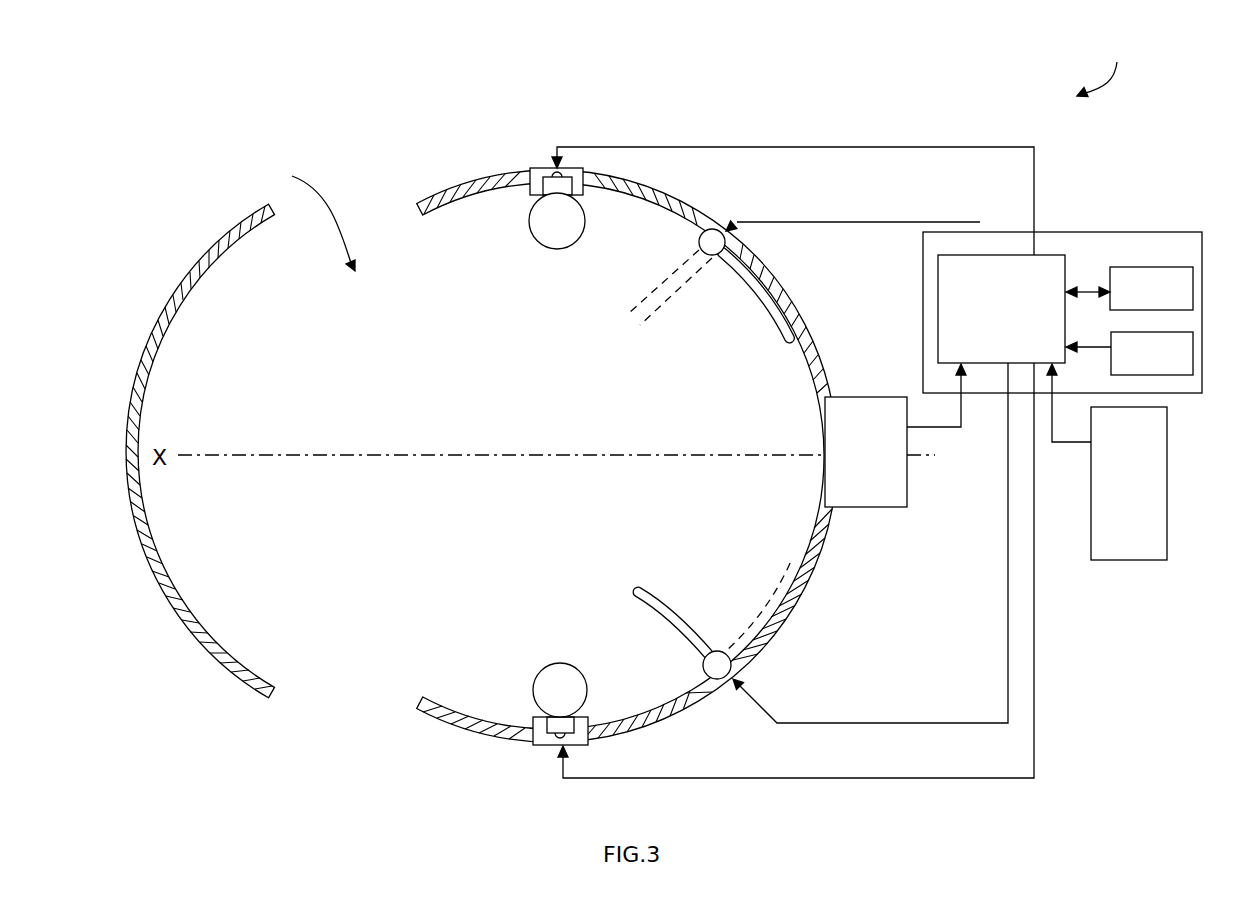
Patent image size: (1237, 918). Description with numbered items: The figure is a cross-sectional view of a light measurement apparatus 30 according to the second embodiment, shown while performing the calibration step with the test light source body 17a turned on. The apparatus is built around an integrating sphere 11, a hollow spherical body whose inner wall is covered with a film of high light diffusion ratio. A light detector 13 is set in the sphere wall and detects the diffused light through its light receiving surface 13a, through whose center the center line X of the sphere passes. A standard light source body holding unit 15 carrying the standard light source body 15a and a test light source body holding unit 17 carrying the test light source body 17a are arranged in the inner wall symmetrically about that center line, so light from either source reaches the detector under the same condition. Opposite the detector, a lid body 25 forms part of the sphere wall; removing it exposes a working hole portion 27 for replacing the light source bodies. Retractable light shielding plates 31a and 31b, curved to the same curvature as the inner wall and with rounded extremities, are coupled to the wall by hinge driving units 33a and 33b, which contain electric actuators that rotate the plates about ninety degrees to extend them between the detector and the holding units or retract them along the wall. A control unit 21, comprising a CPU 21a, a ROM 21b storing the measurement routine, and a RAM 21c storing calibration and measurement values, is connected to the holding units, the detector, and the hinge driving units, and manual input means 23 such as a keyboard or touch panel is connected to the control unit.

The integrating sphere 11 is at (431, 710).
The light detector 13 is at (881, 489).
The light receiving surface 13a is at (818, 486).
The standard light source body holding unit 15 is at (535, 177).
The standard light source body 15a is at (552, 217).
The test light source body holding unit 17 is at (537, 738).
The test light source body 17a is at (555, 690).
The control unit 21 is at (1141, 254).
The CPU 21a is at (1023, 324).
The ROM 21b is at (1172, 364).
The RAM 21c is at (1172, 300).
The manual input means 23 is at (1144, 499).
The lid body 25 is at (168, 584).
The working hole portion 27 is at (310, 217).
The light measurement apparatus 30 is at (1102, 67).
The light shielding plate 31a is at (762, 283).
The light shielding plate 31b is at (682, 625).
The hinge driving unit 33a is at (717, 233).
The hinge driving unit 33b is at (732, 674).